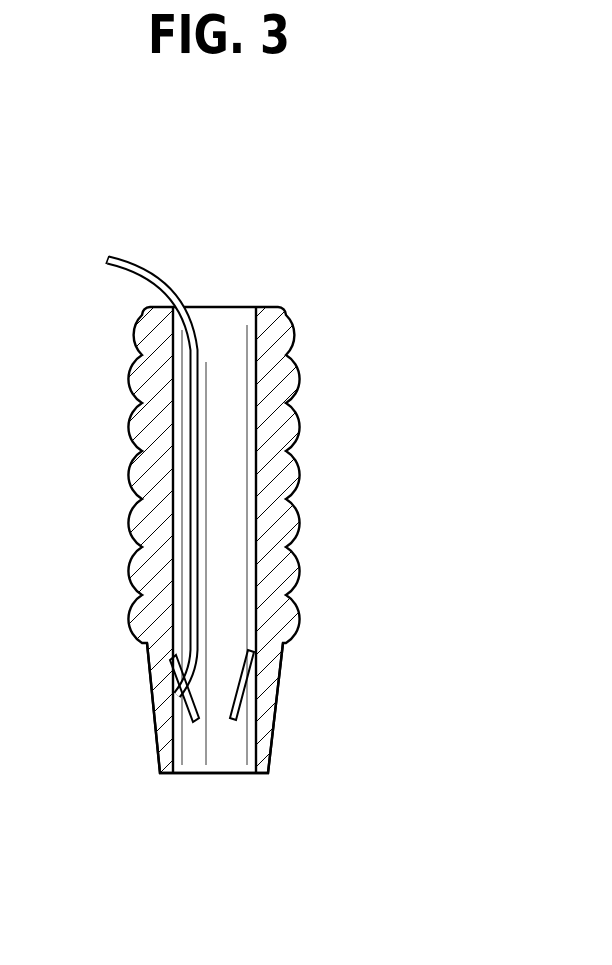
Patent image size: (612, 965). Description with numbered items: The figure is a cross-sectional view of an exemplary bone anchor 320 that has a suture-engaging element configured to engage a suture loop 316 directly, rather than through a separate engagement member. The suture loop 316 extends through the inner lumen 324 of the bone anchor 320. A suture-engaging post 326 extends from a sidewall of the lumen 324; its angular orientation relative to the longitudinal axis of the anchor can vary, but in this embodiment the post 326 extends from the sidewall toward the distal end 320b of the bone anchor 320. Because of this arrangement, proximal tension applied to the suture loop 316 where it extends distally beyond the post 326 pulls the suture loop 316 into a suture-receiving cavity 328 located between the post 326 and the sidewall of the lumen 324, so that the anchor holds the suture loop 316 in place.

The bone anchor 320 is at (374, 303).
The distal end 320b is at (270, 762).
The inner lumen 324 is at (214, 327).
The suture loop 316 is at (190, 502).
The suture-engaging post 326 is at (248, 708).
The suture-receiving cavity 328 is at (180, 708).